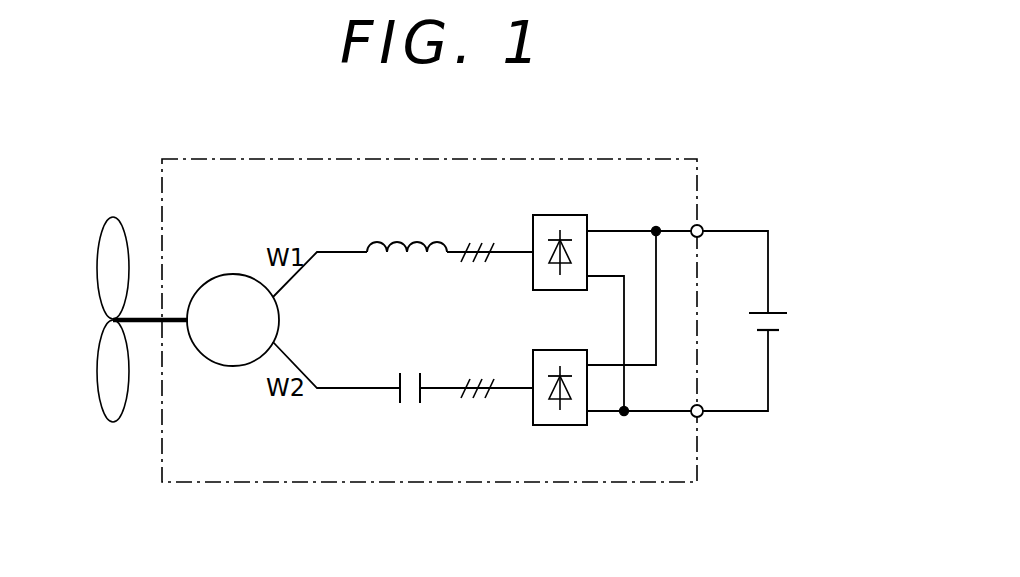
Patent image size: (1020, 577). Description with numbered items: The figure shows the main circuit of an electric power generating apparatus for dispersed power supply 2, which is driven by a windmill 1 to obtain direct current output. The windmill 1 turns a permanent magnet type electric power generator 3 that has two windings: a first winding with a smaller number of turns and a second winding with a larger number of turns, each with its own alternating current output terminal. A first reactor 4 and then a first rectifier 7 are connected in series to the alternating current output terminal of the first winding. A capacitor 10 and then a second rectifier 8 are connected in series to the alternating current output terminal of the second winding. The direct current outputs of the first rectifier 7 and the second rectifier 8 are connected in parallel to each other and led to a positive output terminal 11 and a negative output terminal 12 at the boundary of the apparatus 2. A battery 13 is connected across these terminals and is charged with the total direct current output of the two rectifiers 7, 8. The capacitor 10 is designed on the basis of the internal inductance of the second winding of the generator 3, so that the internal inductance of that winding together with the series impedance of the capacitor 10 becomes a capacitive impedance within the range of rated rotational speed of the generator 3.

The windmill 1 is at (113, 421).
The electric power generating apparatus for dispersed power supply 2 is at (573, 482).
The permanent magnet type electric power generator 3 is at (225, 274).
The first reactor 4 is at (411, 246).
The first rectifier 7 is at (533, 215).
The second rectifier 8 is at (533, 427).
The capacitor 10 is at (411, 371).
The positive output terminal 11 is at (703, 225).
The negative output terminal 12 is at (703, 417).
The battery 13 is at (781, 322).